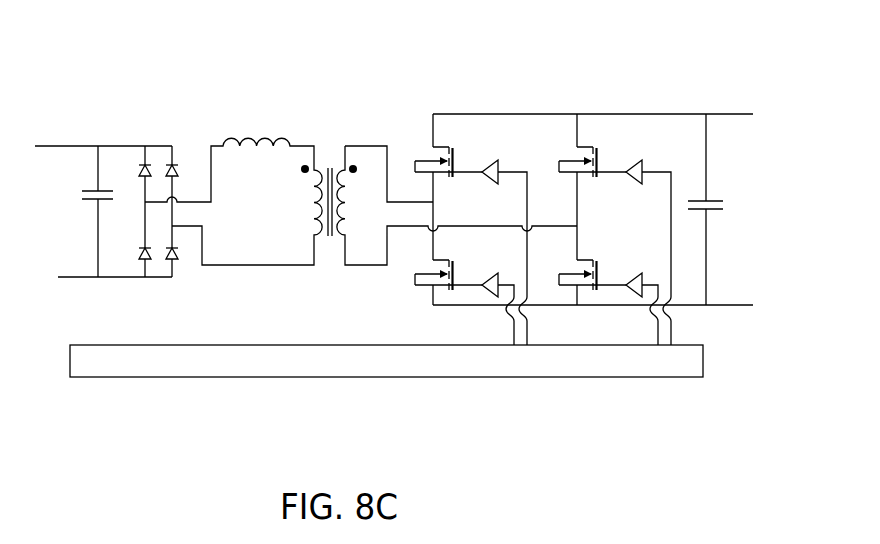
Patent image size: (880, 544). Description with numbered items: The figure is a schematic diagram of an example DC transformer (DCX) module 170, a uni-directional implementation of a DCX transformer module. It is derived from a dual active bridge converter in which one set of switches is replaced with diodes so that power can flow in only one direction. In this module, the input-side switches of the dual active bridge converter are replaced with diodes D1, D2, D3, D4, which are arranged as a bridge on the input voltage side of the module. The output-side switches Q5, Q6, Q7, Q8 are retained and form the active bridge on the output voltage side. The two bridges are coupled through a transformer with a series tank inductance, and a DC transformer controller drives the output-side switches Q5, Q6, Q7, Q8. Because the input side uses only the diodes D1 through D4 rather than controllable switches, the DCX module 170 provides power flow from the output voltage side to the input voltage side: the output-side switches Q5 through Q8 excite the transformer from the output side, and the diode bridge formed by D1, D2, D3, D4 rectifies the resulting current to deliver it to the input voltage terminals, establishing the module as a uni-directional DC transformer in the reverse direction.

The DC transformer module 170 is at (141, 83).
The diode D1 is at (133, 171).
The diode D2 is at (133, 248).
The diode D3 is at (183, 266).
The diode D4 is at (183, 163).
The output-side switch Q5 is at (471, 240).
The output-side switch Q6 is at (464, 295).
The output-side switch Q7 is at (615, 239).
The output-side switch Q8 is at (608, 298).